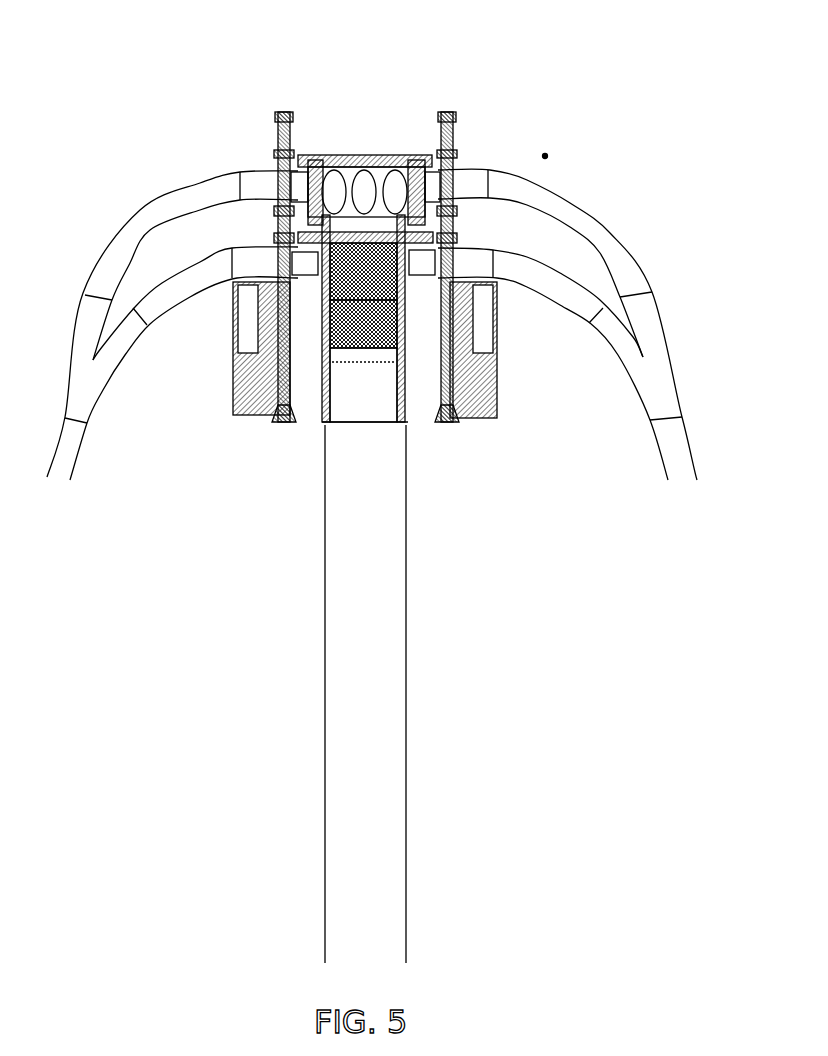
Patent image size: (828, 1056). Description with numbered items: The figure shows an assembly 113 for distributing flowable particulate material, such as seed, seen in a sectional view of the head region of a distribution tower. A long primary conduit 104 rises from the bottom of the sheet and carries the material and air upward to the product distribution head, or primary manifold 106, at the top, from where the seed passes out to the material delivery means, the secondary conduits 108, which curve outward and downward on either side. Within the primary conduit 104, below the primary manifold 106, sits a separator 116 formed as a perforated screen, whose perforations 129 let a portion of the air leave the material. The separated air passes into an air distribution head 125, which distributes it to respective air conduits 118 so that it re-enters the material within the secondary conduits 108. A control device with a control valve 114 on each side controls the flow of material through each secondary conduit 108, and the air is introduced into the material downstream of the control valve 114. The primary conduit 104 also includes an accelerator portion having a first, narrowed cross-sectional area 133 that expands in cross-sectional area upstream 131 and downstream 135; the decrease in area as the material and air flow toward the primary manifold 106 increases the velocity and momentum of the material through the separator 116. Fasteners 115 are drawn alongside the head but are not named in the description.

The primary conduit 104 is at (407, 683).
The primary manifold 106 is at (383, 165).
The secondary conduit 108 is at (158, 220).
The assembly 113 is at (545, 156).
The control valve 114 is at (235, 407).
The bolt 115 is at (276, 212).
The separator 116 is at (400, 283).
The air conduit 118 is at (188, 283).
The air distribution head 125 is at (323, 172).
The perforation 129 is at (358, 328).
The upstream expanding cross-sectional area 131 is at (347, 421).
The first cross-sectional area 133 is at (377, 365).
The downstream expanding cross-sectional area 135 is at (368, 298).